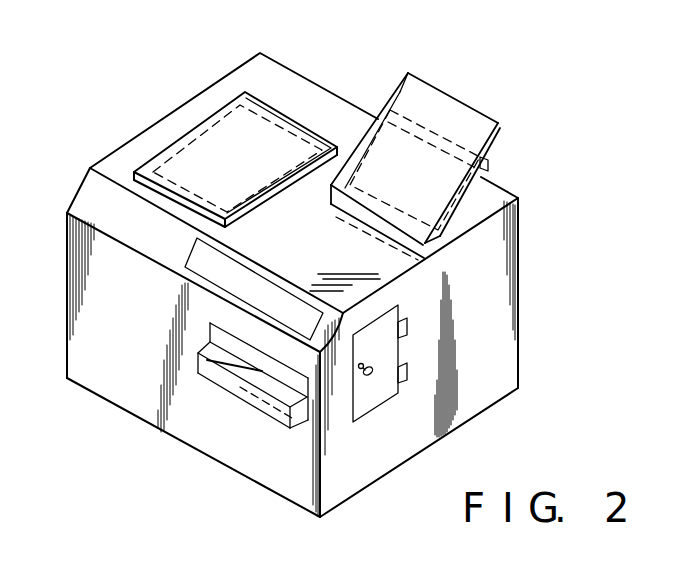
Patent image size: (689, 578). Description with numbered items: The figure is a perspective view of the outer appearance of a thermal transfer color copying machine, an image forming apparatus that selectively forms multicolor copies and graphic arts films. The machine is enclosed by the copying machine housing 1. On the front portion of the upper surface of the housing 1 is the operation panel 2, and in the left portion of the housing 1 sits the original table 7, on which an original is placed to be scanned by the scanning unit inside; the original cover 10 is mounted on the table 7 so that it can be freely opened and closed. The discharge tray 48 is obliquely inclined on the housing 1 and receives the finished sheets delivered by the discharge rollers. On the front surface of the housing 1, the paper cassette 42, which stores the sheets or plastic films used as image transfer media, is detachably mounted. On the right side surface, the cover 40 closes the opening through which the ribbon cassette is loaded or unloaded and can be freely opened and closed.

The copying machine housing 1 is at (494, 390).
The operation panel 2 is at (197, 257).
The original table 7 is at (185, 152).
The original cover 10 is at (223, 110).
The cover 40 is at (391, 396).
The paper cassette 42 is at (252, 403).
The discharge tray 48 is at (462, 101).